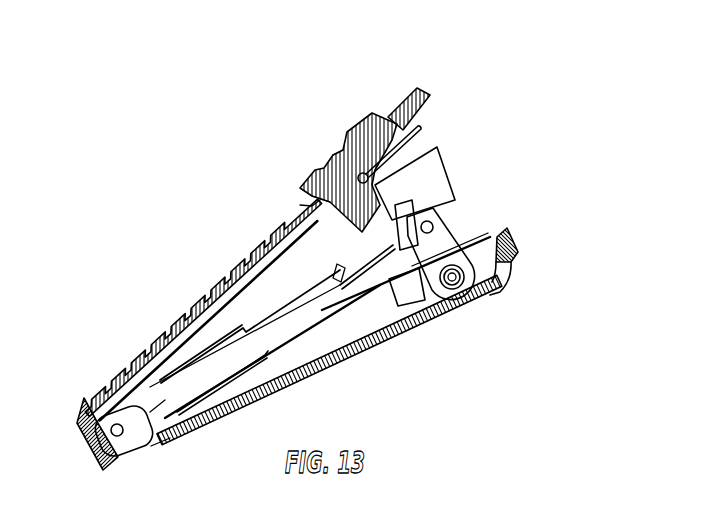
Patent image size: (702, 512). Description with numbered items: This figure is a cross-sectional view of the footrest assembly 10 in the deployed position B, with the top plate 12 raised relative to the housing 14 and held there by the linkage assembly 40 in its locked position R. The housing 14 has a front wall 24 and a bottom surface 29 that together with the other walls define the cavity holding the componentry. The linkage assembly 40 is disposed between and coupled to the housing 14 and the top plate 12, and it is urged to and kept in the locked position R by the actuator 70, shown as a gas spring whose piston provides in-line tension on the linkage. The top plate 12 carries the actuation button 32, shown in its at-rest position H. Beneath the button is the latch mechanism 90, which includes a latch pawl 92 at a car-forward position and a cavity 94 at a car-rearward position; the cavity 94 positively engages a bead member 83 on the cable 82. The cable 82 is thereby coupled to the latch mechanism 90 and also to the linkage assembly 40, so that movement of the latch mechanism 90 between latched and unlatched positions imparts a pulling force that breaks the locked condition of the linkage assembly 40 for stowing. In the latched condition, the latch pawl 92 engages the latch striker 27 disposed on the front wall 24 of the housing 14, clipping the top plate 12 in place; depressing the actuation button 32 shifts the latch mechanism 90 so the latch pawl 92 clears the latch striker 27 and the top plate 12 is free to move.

The footrest assembly 10 is at (137, 300).
The deployed position B is at (183, 313).
The top plate 12 is at (248, 246).
The cavity 94 is at (300, 205).
The at-rest position H is at (320, 147).
The bead member 83 is at (343, 138).
The actuation button 32 is at (360, 113).
The latch pawl 92 is at (427, 138).
The cable 82 is at (378, 172).
The latch mechanism 90 is at (423, 172).
The linkage assembly 40 is at (452, 207).
The locked position R is at (445, 228).
The front wall 24 is at (517, 253).
The latch striker 27 is at (507, 273).
The housing 14 is at (340, 376).
The bottom surface 29 is at (292, 391).
The actuator 70 is at (184, 390).